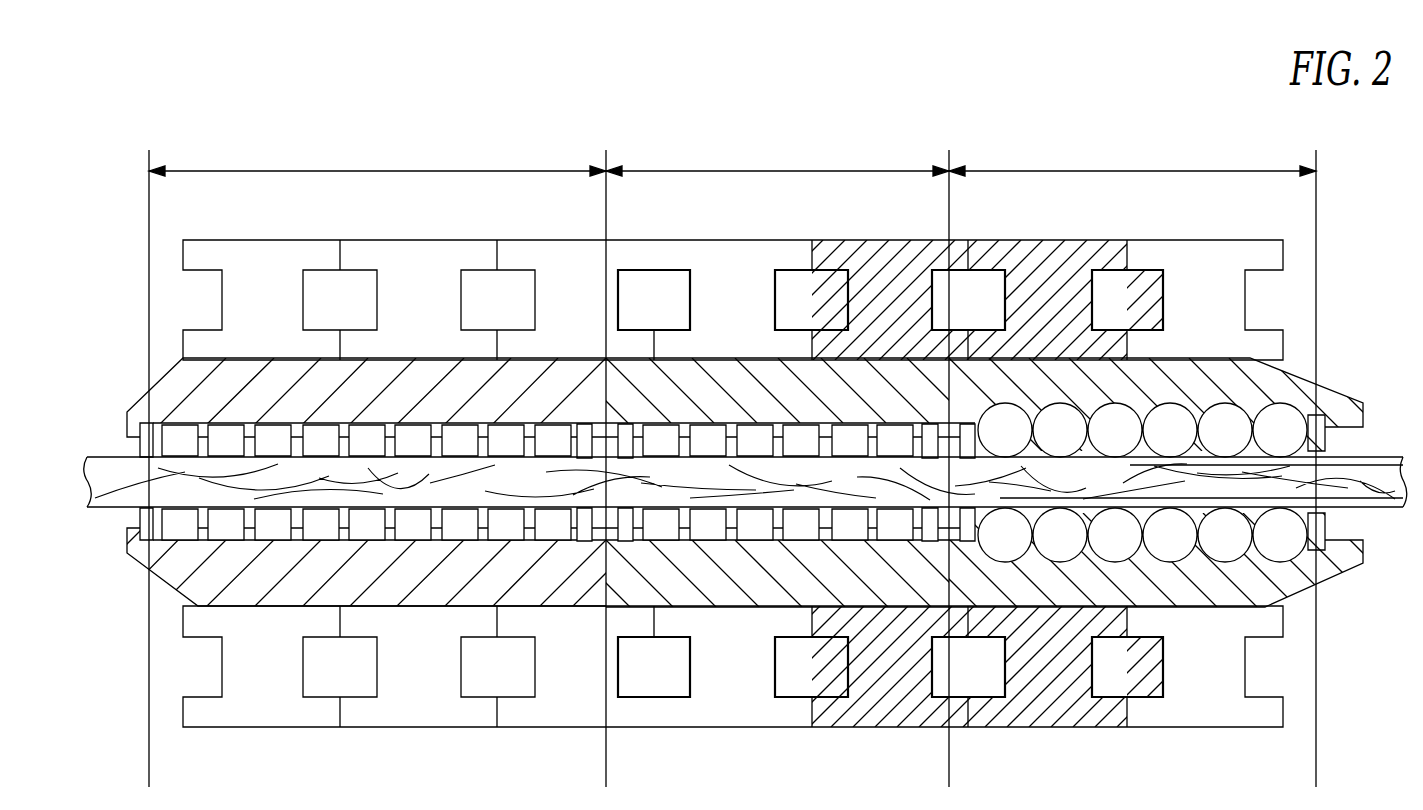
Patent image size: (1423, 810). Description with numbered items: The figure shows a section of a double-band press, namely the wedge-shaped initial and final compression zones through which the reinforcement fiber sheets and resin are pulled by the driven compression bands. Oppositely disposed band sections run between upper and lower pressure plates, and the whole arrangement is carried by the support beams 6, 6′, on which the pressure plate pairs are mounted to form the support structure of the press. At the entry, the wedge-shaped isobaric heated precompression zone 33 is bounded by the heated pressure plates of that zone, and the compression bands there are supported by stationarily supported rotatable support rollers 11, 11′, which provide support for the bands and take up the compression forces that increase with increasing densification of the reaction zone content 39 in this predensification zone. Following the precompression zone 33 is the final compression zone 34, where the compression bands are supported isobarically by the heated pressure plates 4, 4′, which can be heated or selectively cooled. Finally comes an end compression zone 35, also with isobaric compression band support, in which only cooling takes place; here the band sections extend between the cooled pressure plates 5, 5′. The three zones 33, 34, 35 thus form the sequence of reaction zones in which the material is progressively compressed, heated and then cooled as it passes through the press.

The precompression zone 33 is at (1132, 158).
The final compression zone 34 is at (777, 158).
The reaction zone 35 is at (377, 158).
The support beam 6 is at (250, 272).
The support beam 6′ is at (258, 687).
The cooled pressure plate 5 is at (418, 375).
The cooled pressure plate 5′ is at (433, 590).
The heated pressure plate 4 is at (683, 378).
The heated pressure plate 4′ is at (712, 592).
The reaction zone content 39 is at (778, 378).
The support roller 11 is at (1105, 418).
The support roller 11′ is at (1107, 542).